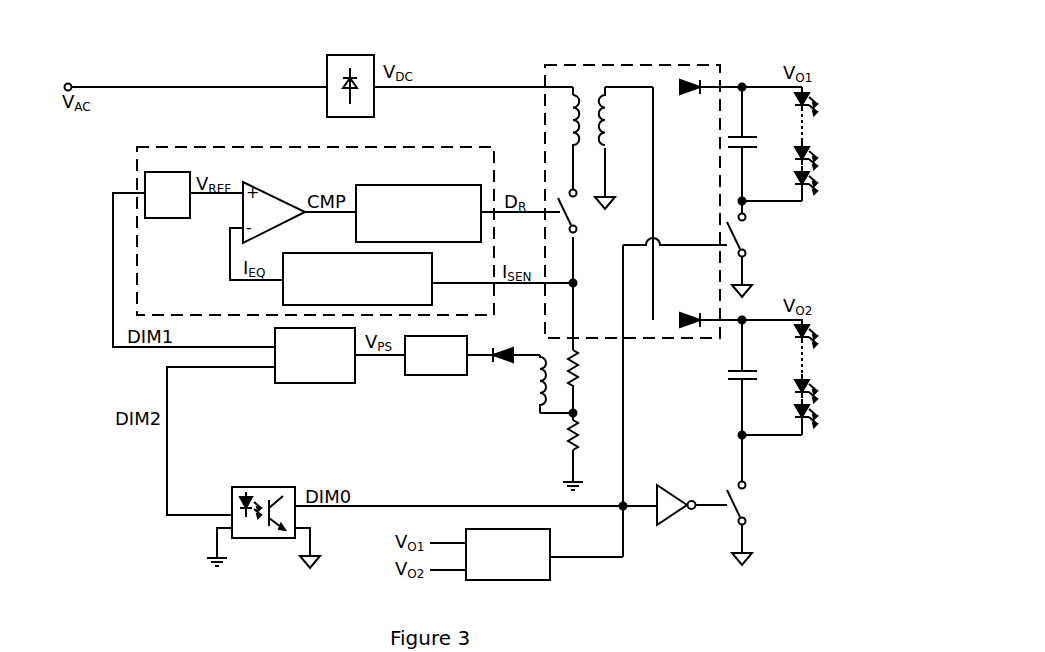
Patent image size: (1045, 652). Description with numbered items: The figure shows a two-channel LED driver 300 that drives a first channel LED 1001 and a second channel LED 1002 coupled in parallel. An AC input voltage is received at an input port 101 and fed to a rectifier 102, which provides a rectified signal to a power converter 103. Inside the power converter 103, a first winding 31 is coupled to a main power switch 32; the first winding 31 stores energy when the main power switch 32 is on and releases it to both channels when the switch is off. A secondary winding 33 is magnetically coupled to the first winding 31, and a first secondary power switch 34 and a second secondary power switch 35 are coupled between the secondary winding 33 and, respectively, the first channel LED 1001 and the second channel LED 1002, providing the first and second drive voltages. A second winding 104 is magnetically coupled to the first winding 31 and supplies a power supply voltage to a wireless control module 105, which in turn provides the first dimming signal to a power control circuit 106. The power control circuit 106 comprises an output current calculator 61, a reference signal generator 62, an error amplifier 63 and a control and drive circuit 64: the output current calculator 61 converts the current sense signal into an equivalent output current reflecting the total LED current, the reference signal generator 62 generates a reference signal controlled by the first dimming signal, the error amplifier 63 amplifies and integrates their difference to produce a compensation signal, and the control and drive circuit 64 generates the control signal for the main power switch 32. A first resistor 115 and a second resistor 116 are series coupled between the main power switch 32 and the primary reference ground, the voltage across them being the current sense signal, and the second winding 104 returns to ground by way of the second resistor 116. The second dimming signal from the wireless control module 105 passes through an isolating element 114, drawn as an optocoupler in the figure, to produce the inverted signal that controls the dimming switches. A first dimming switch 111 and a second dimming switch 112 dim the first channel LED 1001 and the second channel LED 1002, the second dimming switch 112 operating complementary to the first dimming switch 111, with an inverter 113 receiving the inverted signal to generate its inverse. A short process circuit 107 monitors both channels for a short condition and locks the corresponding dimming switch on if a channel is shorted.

The two-channel LED driver 300 is at (776, 40).
The input port 101 is at (73, 84).
The rectifier 102 is at (323, 100).
The power converter 103 is at (545, 72).
The second winding 104 is at (530, 380).
The wireless control module (RF/MCU) 105 is at (330, 386).
The power control circuit 106 is at (137, 162).
The short process circuit 107 is at (508, 554).
The first dimming switch 111 is at (750, 237).
The second dimming switch 112 is at (750, 500).
The inverter 113 is at (692, 521).
The optocoupler 114 is at (260, 481).
The first resistor 115 is at (580, 368).
The second resistor 116 is at (580, 436).
The first winding 31 is at (569, 118).
The main power switch 32 is at (583, 213).
The secondary winding 33 is at (608, 131).
The first secondary power switch 34 is at (688, 95).
The second secondary power switch 35 is at (692, 312).
The output current calculator 61 is at (434, 294).
The reference signal generator 62 is at (167, 195).
The error amplifier (EA) 63 is at (278, 193).
The control and drive circuit 64 is at (411, 184).
The first channel LED 1001 is at (799, 143).
The second channel LED 1002 is at (799, 377).